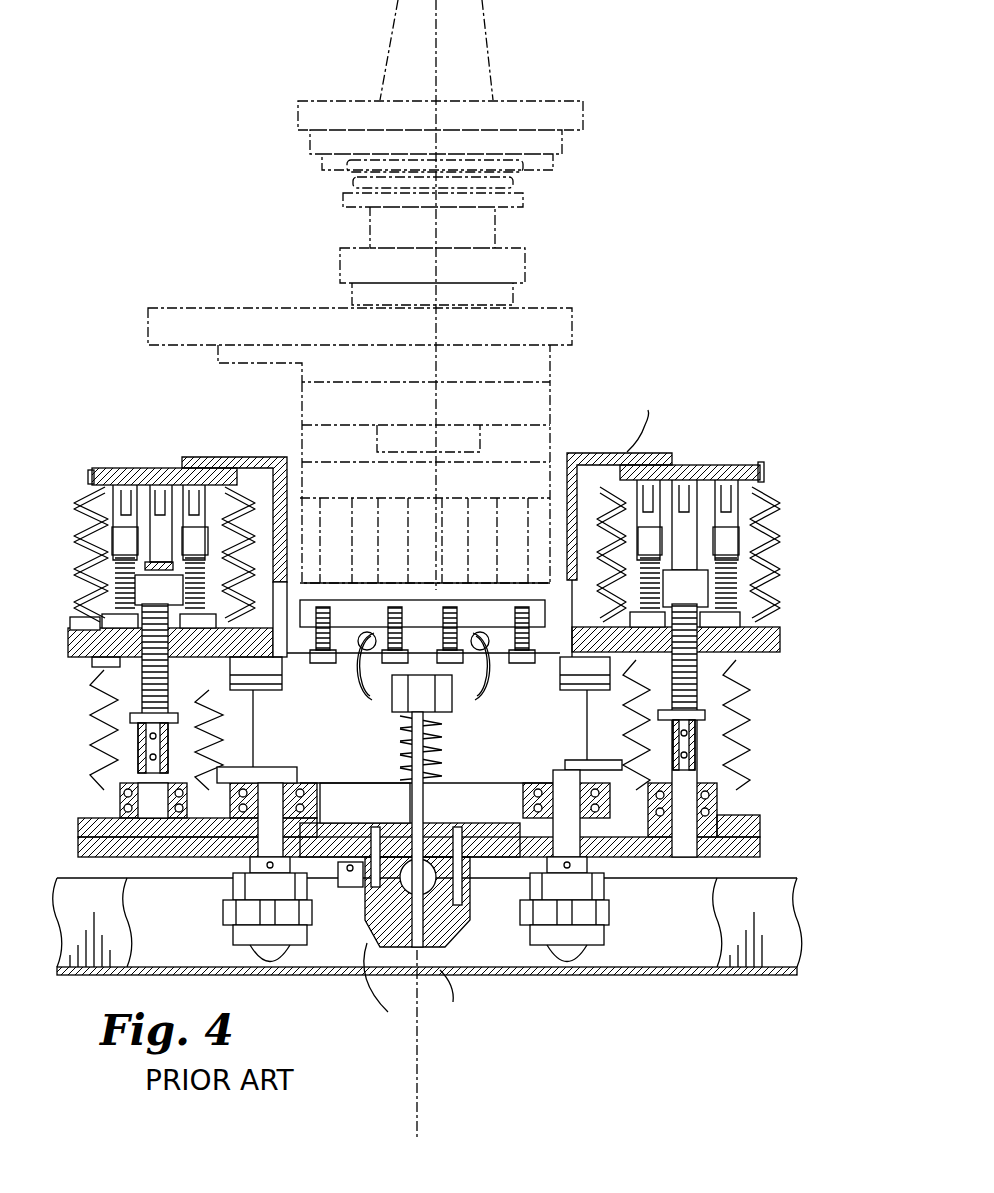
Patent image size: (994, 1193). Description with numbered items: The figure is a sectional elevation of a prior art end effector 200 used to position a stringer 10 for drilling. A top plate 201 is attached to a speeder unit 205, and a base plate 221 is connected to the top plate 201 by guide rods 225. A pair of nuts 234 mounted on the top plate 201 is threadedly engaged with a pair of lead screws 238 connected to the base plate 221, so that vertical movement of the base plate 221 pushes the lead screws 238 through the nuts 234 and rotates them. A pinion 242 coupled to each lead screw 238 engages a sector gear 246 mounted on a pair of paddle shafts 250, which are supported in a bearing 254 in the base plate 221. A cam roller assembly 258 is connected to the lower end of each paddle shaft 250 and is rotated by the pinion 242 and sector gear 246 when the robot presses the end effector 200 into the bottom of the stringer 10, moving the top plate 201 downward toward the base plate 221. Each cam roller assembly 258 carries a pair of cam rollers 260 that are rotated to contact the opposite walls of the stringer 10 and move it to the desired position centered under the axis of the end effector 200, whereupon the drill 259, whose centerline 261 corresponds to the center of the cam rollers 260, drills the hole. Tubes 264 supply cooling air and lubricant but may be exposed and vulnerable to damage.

The speeder unit 205 is at (550, 190).
The prior art end effector 200 is at (84, 458).
The nuts 234 is at (155, 592).
The lead screws 238 is at (150, 688).
The tubes 264 is at (366, 682).
The guide rods 225 is at (592, 716).
The paddle shafts 250 is at (268, 790).
The bearing 254 is at (430, 803).
The drill 259 is at (458, 893).
The cam rollers 260 is at (222, 926).
The cam roller assembly 258 is at (295, 962).
The centerline 261 is at (425, 1062).
The pinion 242 is at (688, 845).
The sector gear 246 is at (630, 850).
The base plate 221 is at (768, 828).
The stringer 10 is at (790, 868).
The top plate 201 is at (792, 638).